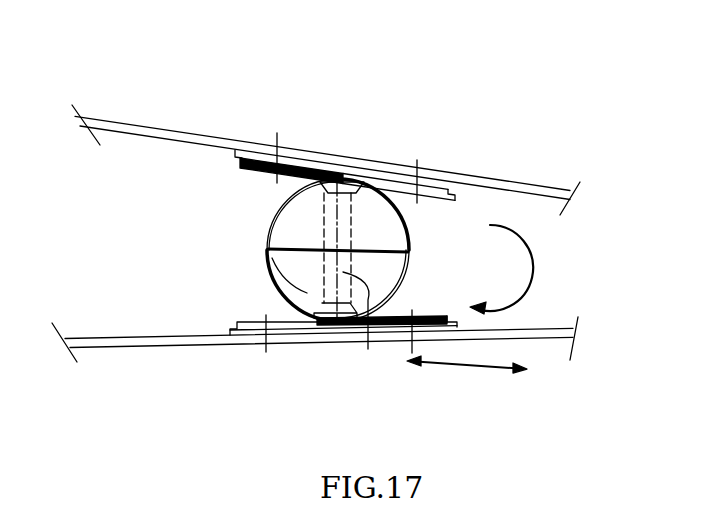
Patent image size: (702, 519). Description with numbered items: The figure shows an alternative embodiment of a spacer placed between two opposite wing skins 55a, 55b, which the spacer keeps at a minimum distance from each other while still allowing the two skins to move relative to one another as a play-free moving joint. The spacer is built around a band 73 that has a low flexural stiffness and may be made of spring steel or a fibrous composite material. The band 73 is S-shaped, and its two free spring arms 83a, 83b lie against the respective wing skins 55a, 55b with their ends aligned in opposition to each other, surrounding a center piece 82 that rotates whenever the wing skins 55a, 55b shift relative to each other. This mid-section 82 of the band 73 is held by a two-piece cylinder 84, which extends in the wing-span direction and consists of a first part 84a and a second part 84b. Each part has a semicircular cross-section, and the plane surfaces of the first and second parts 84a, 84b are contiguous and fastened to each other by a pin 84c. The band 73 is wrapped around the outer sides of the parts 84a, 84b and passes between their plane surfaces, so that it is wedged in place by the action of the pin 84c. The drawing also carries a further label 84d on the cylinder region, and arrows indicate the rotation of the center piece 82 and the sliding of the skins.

The wing skin 55a is at (163, 127).
The wing skin 55b is at (153, 345).
The center piece 82 is at (246, 221).
The band 73 is at (270, 252).
The free spring arm 83a is at (242, 163).
The free spring arm 83b is at (430, 314).
The two-piece cylinder 84 is at (261, 274).
The first part 84a is at (343, 171).
The second part 84b is at (337, 333).
The pin 84c is at (368, 346).
The inner portion 84d is at (271, 282).